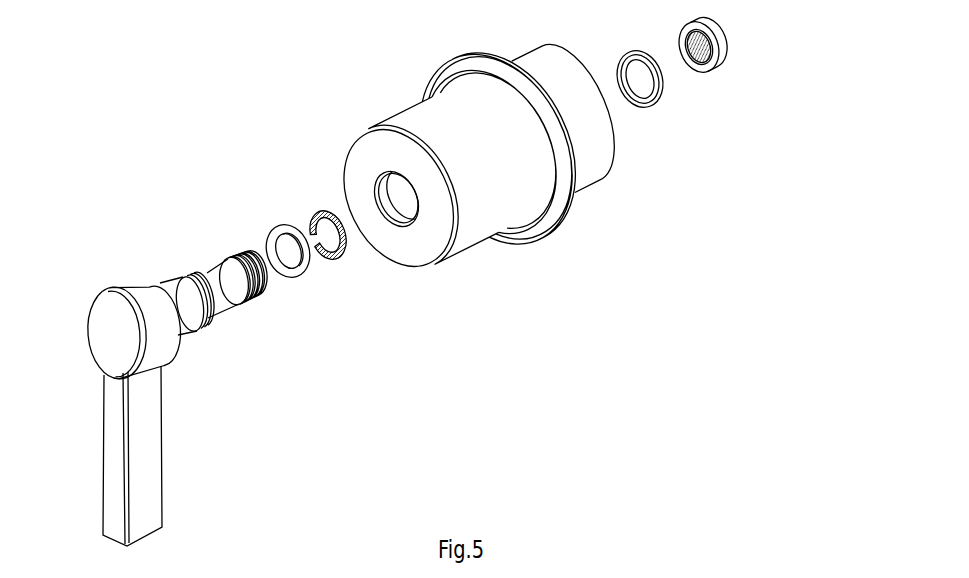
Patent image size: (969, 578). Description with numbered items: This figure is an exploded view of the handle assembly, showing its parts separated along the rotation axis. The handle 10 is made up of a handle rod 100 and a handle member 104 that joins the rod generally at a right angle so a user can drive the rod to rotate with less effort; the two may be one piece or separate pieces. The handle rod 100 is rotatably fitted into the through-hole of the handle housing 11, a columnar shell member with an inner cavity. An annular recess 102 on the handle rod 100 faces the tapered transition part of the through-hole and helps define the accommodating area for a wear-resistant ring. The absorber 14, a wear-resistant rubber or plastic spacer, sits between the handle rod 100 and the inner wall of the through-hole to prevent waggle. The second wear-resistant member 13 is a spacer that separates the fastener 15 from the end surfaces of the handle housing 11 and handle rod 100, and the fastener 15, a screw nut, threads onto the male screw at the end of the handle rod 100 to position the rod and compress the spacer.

The handle 10 is at (210, 398).
The handle rod 100 is at (223, 302).
The annular recess 102 is at (202, 317).
The handle member 104 is at (147, 445).
The handle housing 11 is at (479, 229).
The second wear-resistant member 13 is at (335, 213).
The absorber 14 is at (660, 92).
The fastener 15 is at (722, 45).